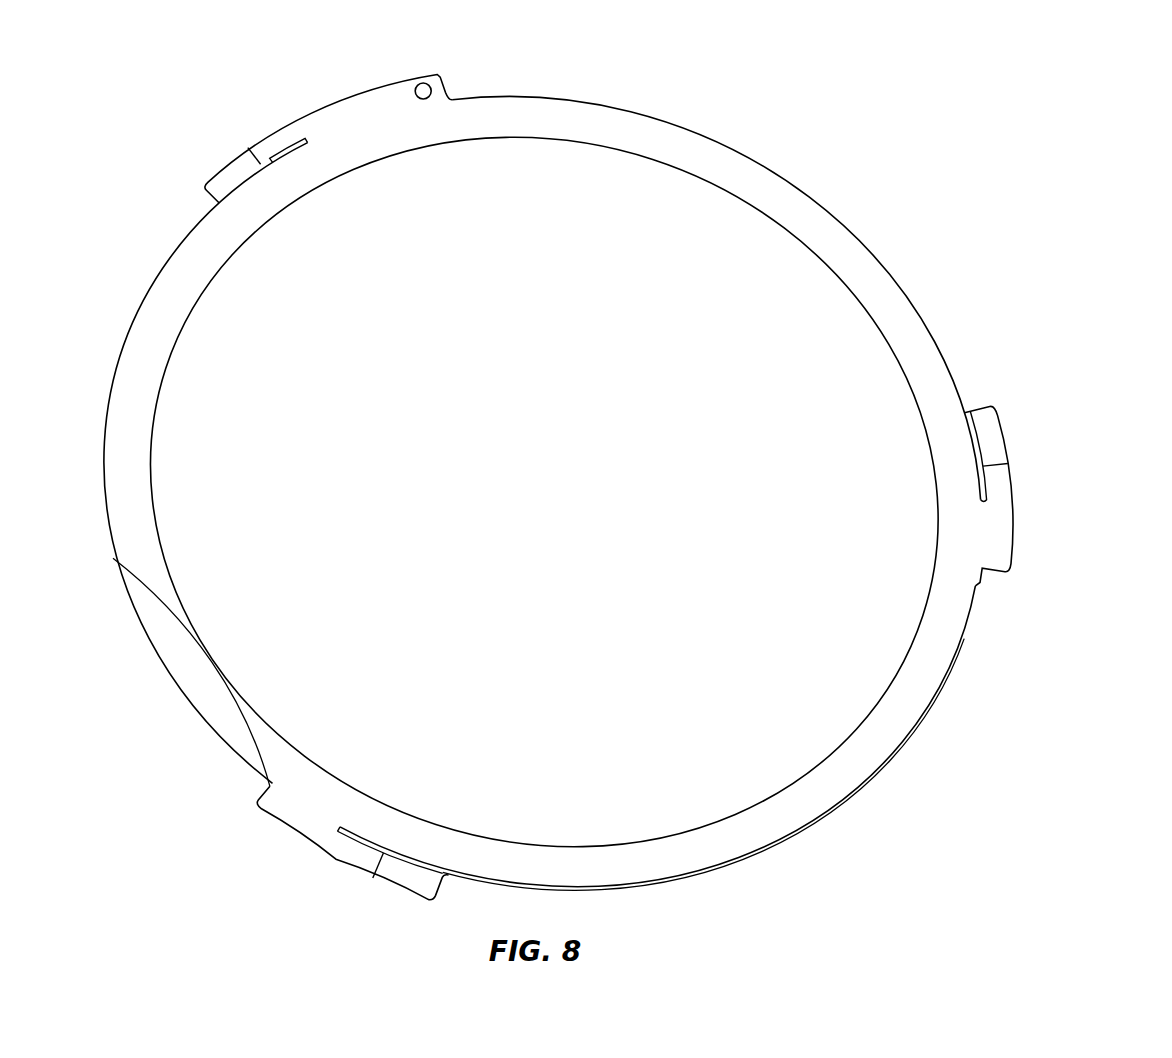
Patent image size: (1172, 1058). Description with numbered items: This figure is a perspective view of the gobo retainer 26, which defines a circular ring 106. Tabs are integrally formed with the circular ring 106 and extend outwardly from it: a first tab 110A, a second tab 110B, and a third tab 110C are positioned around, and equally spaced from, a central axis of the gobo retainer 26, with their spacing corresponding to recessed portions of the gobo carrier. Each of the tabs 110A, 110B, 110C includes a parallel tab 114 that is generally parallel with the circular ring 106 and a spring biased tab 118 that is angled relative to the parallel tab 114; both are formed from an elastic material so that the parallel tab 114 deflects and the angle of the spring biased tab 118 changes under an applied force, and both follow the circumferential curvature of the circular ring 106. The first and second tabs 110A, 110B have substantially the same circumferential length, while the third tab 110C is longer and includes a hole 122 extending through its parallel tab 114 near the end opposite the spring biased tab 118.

The gobo retainer 26 is at (813, 140).
The circular ring 106 is at (912, 332).
The first tab 110A is at (272, 818).
The second tab 110B is at (992, 537).
The third tab 110C is at (322, 127).
The parallel tab 114 is at (287, 140).
The spring biased tab 118 is at (238, 167).
The hole 122 is at (417, 88).